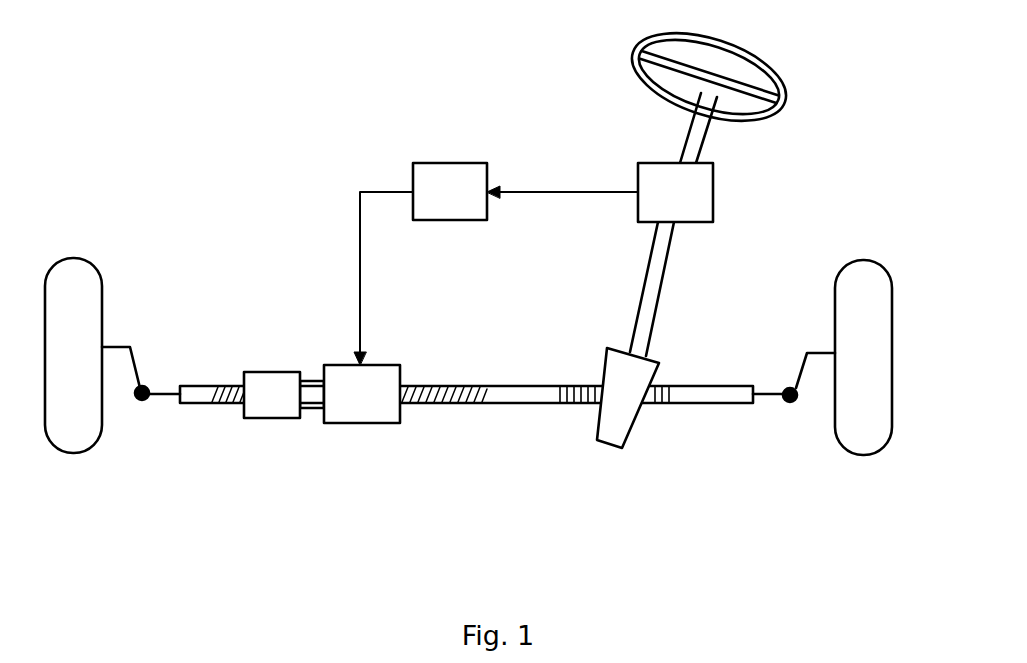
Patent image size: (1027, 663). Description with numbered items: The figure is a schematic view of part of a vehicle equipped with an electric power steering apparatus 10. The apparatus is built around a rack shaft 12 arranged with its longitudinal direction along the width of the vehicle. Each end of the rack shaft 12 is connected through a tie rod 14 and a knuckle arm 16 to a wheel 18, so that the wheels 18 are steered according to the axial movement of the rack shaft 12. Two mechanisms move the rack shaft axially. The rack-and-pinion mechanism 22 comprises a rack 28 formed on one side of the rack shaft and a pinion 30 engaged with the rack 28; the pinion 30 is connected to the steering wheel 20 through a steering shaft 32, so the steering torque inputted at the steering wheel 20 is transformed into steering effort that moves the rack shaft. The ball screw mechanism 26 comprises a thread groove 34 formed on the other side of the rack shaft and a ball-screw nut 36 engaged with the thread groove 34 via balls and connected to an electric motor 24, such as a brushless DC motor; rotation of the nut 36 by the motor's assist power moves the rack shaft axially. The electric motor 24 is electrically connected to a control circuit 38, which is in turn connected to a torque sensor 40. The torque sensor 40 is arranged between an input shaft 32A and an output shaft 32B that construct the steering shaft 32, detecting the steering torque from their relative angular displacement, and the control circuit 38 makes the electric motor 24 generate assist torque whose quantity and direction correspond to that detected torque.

The electric power steering apparatus 10 is at (435, 145).
The rack shaft 12 is at (517, 407).
The tie rod 14 is at (167, 398).
The knuckle arm 16 is at (135, 366).
The wheels 18 is at (85, 284).
The steering wheel 20 is at (752, 58).
The rack-and-pinion mechanism 22 is at (638, 487).
The electric motor 24 is at (353, 414).
The ball screw mechanism 26 is at (325, 475).
The rack 28 is at (566, 404).
The pinion 30 is at (626, 424).
The steering shaft 32 is at (802, 138).
The input shaft 32A is at (690, 145).
The output shaft 32B is at (663, 240).
The thread groove 34 is at (229, 404).
The ball-screw nut 36 is at (270, 407).
The control circuit 38 is at (465, 173).
The torque sensor 40 is at (650, 202).